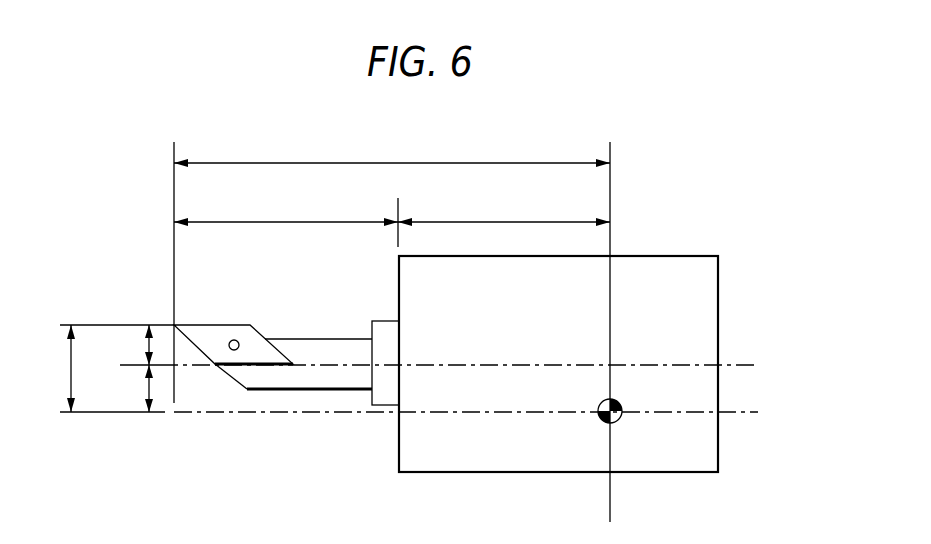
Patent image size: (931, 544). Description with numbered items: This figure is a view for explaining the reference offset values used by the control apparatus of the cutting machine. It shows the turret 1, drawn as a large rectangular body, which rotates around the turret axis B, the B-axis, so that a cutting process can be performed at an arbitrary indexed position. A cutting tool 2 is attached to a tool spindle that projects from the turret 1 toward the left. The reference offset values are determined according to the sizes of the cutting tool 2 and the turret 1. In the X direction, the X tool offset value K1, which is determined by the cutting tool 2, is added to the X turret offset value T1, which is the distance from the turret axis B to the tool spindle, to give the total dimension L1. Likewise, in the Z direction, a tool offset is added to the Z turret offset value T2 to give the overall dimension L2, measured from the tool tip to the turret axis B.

The turret 1 is at (652, 256).
The cutting tool 2 is at (300, 338).
The turret axis B is at (620, 400).
The tool height dimension L1 is at (56, 368).
The tool length dimension L2 is at (392, 151).
The X tool offset value K1 is at (255, 278).
The X turret offset value T1 is at (132, 388).
The Z turret offset value T2 is at (504, 208).